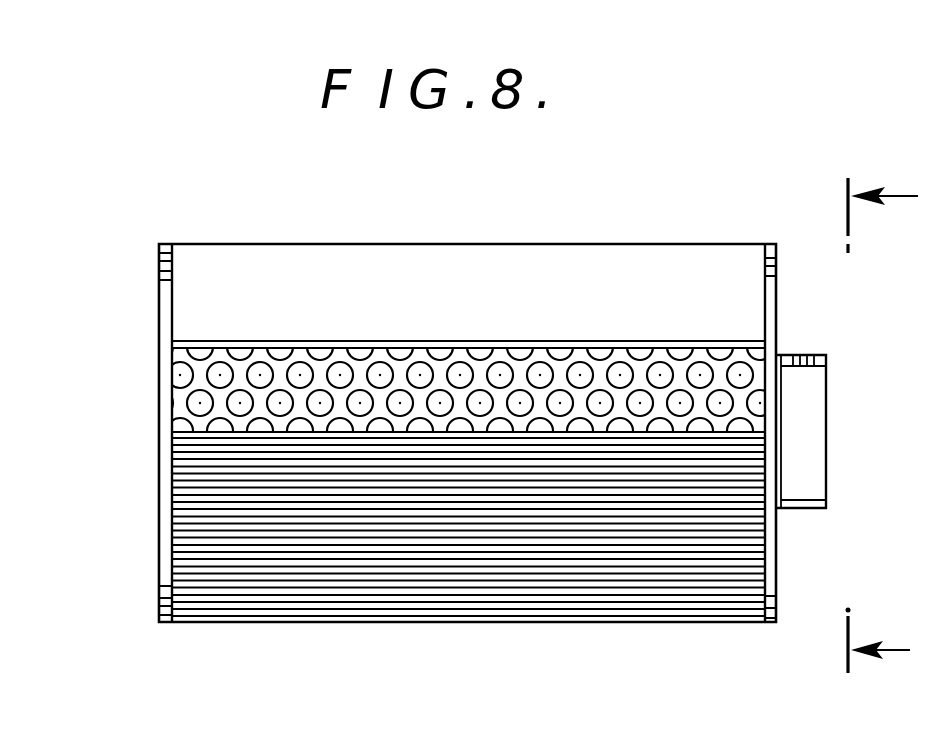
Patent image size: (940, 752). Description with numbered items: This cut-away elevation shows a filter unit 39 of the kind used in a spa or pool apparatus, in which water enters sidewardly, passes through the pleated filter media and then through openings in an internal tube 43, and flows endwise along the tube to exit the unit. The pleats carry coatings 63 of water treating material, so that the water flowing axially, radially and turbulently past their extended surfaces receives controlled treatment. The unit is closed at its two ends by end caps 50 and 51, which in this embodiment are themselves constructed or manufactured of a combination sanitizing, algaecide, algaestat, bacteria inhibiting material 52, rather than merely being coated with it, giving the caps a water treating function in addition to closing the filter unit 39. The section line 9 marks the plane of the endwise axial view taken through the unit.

The filter unit 39 is at (566, 640).
The internal tube 43 is at (422, 338).
The end cap 50 is at (769, 530).
The end cap 51 is at (150, 475).
The combination sanitizing, algaecide, algaestat, bacteria inhibiting material 52 is at (778, 297).
The coatings on pleats 63 is at (287, 553).
The section line 9- 9 is at (862, 425).